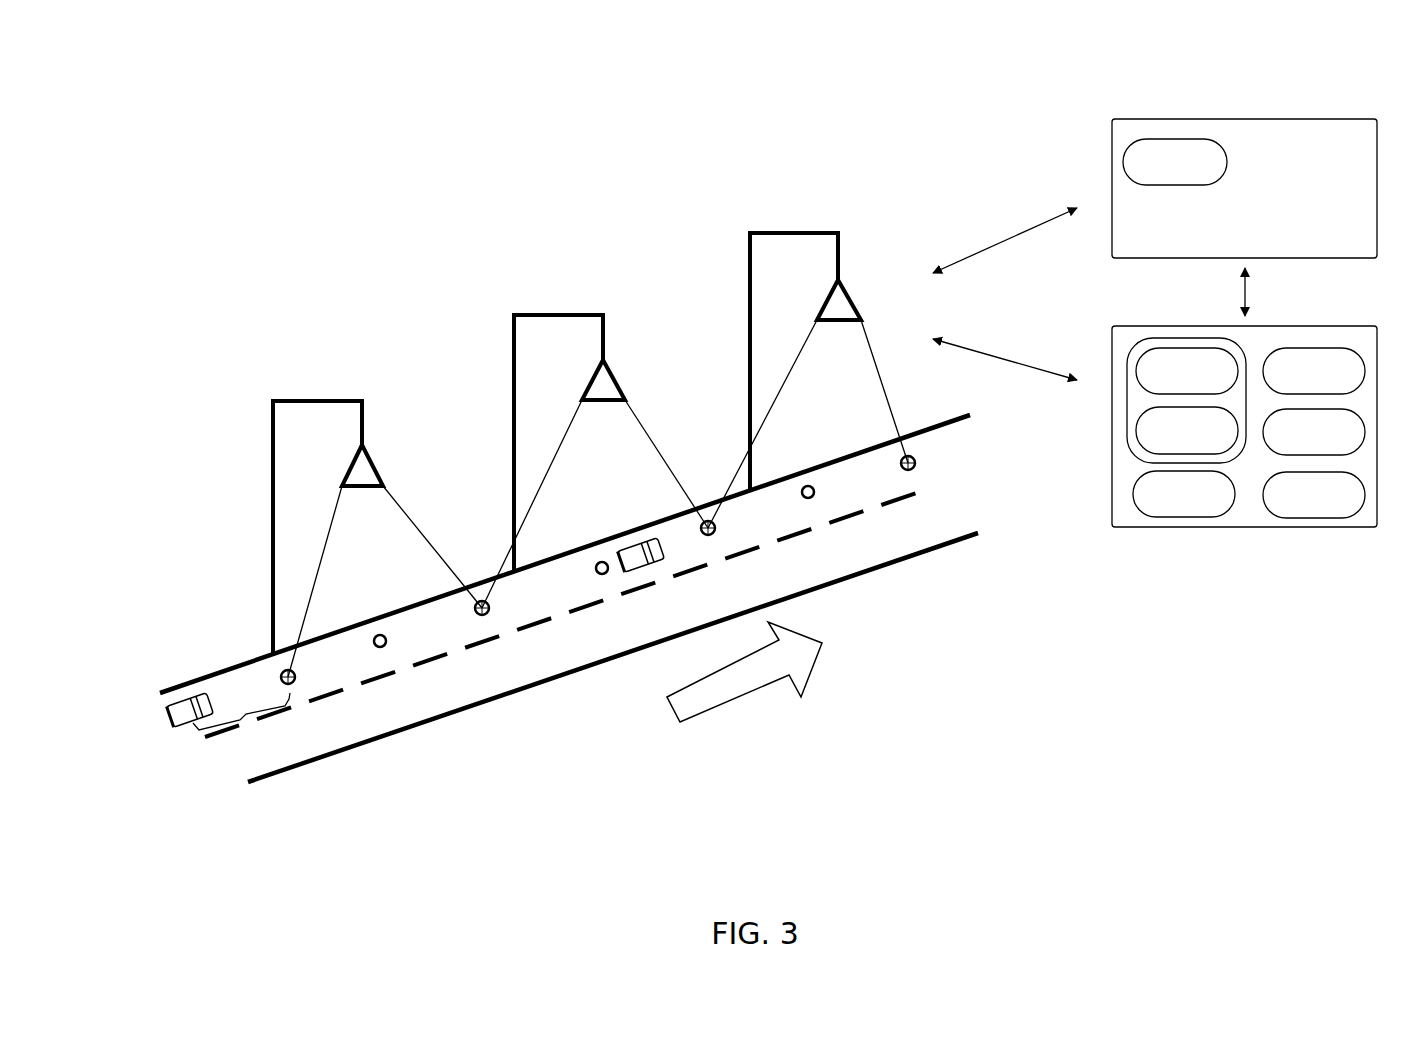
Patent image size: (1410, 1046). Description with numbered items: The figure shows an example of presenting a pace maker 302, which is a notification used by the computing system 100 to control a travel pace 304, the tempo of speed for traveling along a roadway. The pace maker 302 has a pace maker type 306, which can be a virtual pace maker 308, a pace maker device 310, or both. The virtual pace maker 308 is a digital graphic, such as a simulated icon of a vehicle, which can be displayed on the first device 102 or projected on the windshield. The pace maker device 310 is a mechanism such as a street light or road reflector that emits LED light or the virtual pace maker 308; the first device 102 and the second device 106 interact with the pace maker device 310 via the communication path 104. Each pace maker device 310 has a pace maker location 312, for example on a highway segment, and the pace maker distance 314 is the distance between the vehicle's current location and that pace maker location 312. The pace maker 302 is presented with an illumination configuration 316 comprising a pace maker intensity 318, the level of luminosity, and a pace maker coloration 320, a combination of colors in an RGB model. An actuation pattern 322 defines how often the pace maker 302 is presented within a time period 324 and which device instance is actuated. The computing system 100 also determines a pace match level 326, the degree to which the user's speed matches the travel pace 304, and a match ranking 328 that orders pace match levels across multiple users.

The computing system 100 is at (304, 96).
The first device 102 is at (1308, 118).
The communication path 104 is at (1010, 240).
The second device 106 is at (1275, 527).
The pace maker 302 is at (537, 623).
The travel pace 304 is at (797, 652).
The pace maker type 306 is at (775, 232).
The virtual pace maker 308 is at (1152, 174).
The pace maker device 310 is at (364, 470).
The pace maker location 312 is at (266, 652).
The pace maker distance 314 is at (243, 717).
The illumination configuration 316 is at (1127, 398).
The pace maker intensity 318 is at (1164, 387).
The pace maker coloration 320 is at (1164, 445).
The actuation pattern 322 is at (1291, 387).
The time period 324 is at (1291, 444).
The pace match level 326 is at (1161, 506).
The match ranking 328 is at (1291, 506).